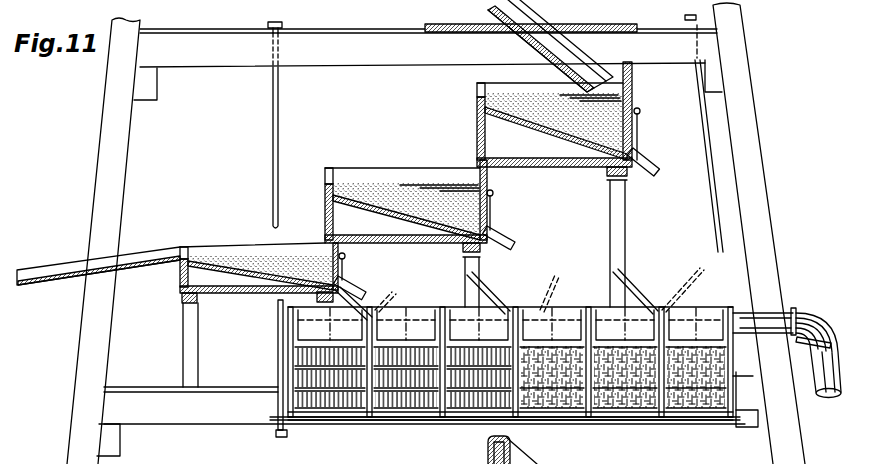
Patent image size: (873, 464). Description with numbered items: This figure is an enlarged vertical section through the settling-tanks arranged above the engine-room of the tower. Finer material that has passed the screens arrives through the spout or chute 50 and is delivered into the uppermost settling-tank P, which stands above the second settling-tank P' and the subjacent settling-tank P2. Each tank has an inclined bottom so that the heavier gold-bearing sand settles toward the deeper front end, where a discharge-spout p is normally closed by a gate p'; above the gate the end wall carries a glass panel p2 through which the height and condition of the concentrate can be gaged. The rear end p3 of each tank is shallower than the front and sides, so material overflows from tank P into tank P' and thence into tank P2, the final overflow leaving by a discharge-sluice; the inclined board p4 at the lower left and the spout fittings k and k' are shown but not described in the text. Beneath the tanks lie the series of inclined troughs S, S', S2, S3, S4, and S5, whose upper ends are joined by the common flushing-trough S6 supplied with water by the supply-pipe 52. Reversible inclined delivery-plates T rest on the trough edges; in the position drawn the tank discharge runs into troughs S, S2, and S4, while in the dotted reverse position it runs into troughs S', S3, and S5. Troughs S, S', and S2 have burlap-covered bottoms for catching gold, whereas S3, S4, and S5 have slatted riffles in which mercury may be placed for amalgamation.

The spout or chute 50 is at (528, 20).
The supply-pipe 52 is at (770, 307).
The settling-tank P is at (554, 195).
The settling-tank P' is at (402, 233).
The settling-tank P2 is at (213, 283).
The discharge-spout p is at (658, 160).
The gate p' is at (653, 134).
The glass panel p2 is at (634, 95).
The rear end p3 is at (477, 120).
The inclined delivery board p4 is at (47, 285).
The pan spout k is at (438, 261).
The spout gate rod k' is at (505, 210).
The inclined delivery plate T is at (488, 290).
The inclined trough S is at (694, 382).
The inclined trough S' is at (625, 382).
The inclined trough S2 is at (565, 412).
The inclined trough S3 is at (462, 423).
The inclined trough S4 is at (402, 412).
The inclined trough S5 is at (347, 415).
The common flushing-trough S6 is at (510, 440).